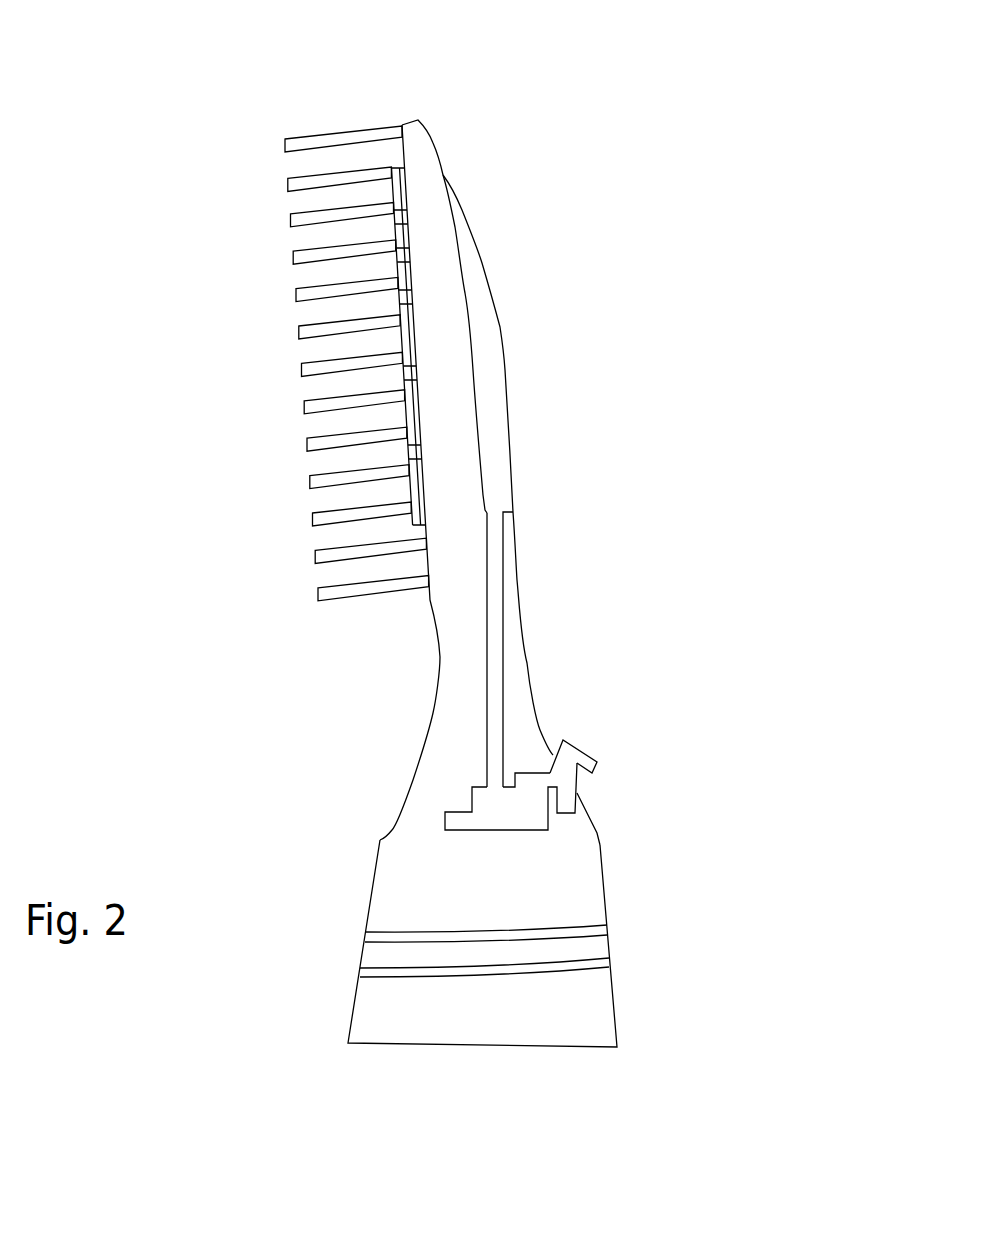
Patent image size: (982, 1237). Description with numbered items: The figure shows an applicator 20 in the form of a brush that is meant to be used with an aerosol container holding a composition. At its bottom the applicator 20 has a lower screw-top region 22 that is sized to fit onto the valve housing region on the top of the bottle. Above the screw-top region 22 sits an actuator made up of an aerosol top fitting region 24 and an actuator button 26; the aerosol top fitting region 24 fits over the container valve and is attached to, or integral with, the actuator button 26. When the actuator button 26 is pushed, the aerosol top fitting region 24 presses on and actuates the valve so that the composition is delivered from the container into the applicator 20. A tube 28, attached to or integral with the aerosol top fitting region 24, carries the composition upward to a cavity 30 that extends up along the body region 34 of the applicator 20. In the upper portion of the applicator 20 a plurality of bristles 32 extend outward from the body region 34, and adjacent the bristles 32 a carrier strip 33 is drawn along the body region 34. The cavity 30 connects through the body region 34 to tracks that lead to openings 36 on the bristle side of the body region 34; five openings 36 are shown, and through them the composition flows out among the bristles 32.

The applicator 20 is at (523, 87).
The lower screw-top region 22 is at (590, 925).
The aerosol top fitting region 24 is at (492, 820).
The actuator button 26 is at (582, 753).
The tube 28 is at (495, 640).
The cavity 30 is at (497, 455).
The bristles 32 is at (287, 146).
The bristle carrier strip 33 is at (398, 199).
The body region 34 is at (427, 180).
The openings 36 is at (396, 273).